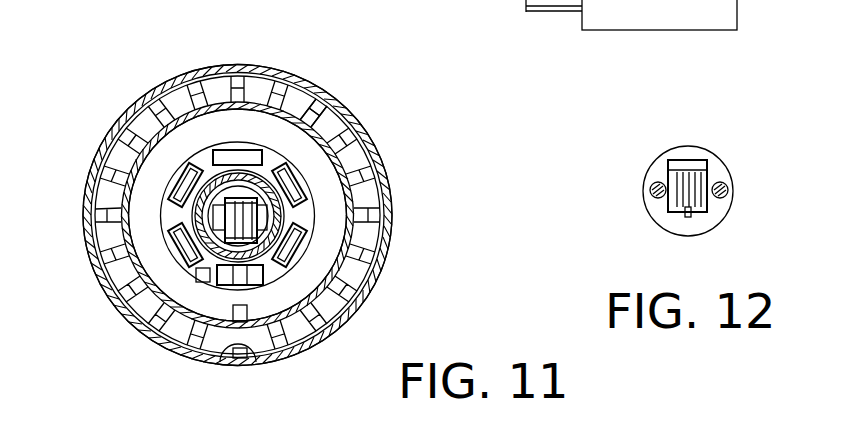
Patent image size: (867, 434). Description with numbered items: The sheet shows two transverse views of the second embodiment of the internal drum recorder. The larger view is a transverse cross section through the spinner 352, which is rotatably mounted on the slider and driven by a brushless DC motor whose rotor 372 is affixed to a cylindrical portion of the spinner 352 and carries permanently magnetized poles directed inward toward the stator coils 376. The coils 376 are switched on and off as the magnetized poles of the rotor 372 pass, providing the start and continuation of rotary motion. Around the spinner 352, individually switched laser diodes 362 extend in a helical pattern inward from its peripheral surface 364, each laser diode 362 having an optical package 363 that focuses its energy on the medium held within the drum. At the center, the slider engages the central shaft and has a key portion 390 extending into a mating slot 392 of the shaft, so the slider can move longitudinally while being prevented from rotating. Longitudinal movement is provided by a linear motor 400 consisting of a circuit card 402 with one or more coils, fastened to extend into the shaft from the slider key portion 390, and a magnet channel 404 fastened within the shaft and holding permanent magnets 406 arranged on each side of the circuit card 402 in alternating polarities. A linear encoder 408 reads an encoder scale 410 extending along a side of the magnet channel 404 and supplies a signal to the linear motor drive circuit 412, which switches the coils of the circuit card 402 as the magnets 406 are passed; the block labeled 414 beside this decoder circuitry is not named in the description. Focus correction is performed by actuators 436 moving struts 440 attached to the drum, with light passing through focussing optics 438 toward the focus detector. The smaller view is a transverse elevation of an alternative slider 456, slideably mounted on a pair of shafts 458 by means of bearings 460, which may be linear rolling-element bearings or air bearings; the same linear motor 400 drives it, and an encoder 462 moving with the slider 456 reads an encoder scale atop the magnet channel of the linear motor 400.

In FIG. 11, the spinner 352 is at (215, 64).
In FIG. 11, the laser diodes 362 is at (307, 96).
In FIG. 11, the optical package 363 is at (134, 106).
In FIG. 11, the peripheral surface 364 is at (300, 112).
In FIG. 11, the rotor 372 is at (122, 132).
In FIG. 11, the coils 376 is at (305, 177).
In FIG. 11, the key portion 390 is at (298, 297).
In FIG. 11, the mating slot 392 is at (177, 265).
In FIG. 11, the linear motor 400 is at (266, 213).
In FIG. 12, the linear motor 400 is at (710, 175).
In FIG. 11, the circuit card 402 is at (275, 258).
In FIG. 11, the magnet channel 404 is at (203, 205).
In FIG. 11, the permanent magnets 406 is at (145, 277).
In FIG. 11, the linear encoder 408 is at (207, 216).
In FIG. 11, the encoder scale 410 is at (168, 185).
In FIG. 11, the linear motor drive circuit 412 is at (396, 0).
In FIG. 11, the decoder 414 is at (752, 0).
In FIG. 11, the actuators 436 is at (198, 282).
In FIG. 11, the focussing optics 438 is at (233, 318).
In FIG. 11, the struts 440 is at (263, 364).
In FIG. 12, the alternative slider 456 is at (702, 235).
In FIG. 12, the shafts 458 is at (655, 202).
In FIG. 12, the bearings 460 is at (723, 203).
In FIG. 12, the encoder 462 is at (690, 162).